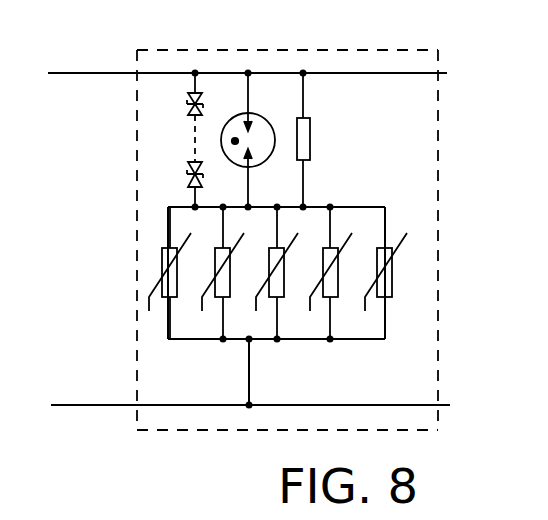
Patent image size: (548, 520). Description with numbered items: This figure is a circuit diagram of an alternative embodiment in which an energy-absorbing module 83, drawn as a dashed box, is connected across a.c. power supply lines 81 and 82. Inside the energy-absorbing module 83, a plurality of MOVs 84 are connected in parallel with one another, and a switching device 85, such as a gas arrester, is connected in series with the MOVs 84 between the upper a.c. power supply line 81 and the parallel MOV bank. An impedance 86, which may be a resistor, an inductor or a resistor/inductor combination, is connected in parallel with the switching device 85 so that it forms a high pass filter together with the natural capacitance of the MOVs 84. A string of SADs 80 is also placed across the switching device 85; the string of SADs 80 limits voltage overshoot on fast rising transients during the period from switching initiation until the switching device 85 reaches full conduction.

The string of SADs 80 is at (176, 113).
The a.c. power supply line 81 is at (58, 74).
The a.c. power supply line 82 is at (73, 404).
The energy-absorbing module 83 is at (150, 50).
The MOVs 84 is at (160, 248).
The switching device 85 is at (273, 109).
The impedance 86 is at (311, 142).